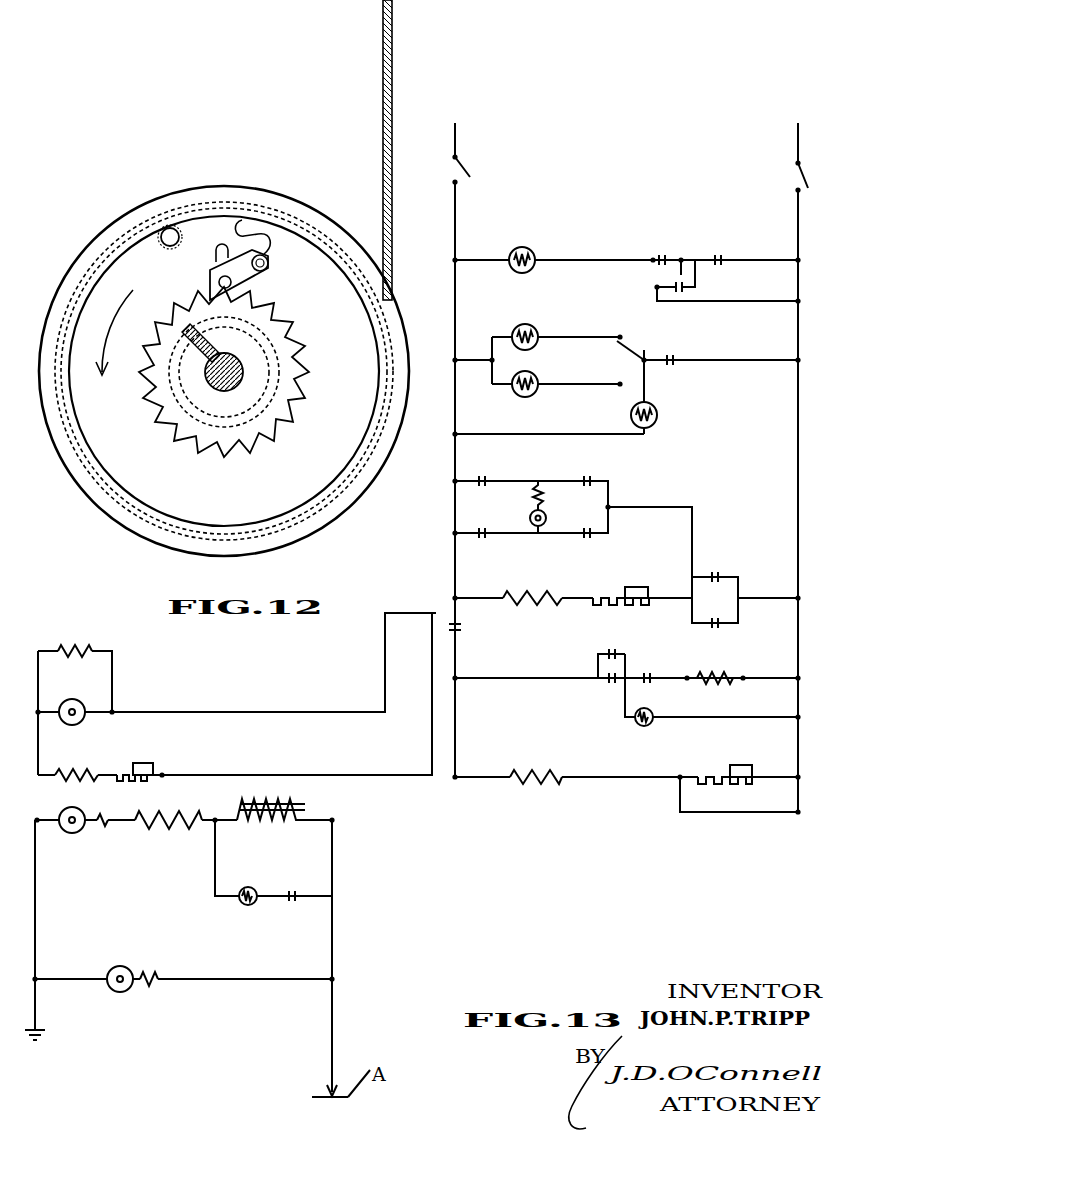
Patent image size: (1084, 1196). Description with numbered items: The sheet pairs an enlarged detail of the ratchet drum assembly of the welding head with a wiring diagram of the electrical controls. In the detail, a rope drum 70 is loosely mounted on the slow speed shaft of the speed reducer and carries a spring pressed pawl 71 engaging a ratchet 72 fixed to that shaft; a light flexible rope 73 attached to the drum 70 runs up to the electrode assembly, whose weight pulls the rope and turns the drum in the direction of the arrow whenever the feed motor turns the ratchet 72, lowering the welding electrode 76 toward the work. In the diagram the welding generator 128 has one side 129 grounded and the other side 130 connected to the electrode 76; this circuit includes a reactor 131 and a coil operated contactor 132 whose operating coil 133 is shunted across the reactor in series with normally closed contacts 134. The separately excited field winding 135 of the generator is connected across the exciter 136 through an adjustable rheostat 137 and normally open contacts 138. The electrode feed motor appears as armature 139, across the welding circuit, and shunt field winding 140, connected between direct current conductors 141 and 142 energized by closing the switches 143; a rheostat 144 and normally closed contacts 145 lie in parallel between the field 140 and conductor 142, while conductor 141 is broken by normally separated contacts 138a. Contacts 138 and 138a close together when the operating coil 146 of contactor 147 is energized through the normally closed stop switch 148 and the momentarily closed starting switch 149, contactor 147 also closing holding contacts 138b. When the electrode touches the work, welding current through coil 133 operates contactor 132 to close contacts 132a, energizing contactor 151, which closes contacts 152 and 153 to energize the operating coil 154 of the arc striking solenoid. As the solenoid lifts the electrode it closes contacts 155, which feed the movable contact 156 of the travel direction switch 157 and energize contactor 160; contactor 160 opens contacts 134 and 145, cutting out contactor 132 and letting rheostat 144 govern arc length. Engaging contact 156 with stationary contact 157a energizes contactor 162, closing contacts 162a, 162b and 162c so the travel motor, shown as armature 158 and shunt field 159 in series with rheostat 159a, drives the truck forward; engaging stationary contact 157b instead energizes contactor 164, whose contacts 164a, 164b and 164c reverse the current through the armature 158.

In FIG. 12, the rope drum 70 is at (228, 202).
In FIG. 12, the spring pressed pawl 71 is at (262, 283).
In FIG. 12, the ratchet 72 is at (265, 327).
In FIG. 12, the rope 73 is at (393, 112).
In FIG. 13, the welding electrode 76 is at (327, 1093).
In FIG. 13, the generator 128 is at (72, 833).
In FIG. 13, the welding circuit side 129 is at (38, 915).
In FIG. 13, the welding circuit side 130 is at (334, 881).
In FIG. 13, the reactor 131 is at (313, 805).
In FIG. 13, the coil operated contactor 132 is at (257, 907).
In FIG. 13, the normally separated contacts 132a is at (611, 681).
In FIG. 13, the operating coil 133 is at (243, 902).
In FIG. 13, the normally closed contacts 134 is at (293, 884).
In FIG. 13, the field winding 135 is at (77, 767).
In FIG. 13, the exciter 136 is at (91, 702).
In FIG. 13, the adjustable rheostat 137 is at (163, 767).
In FIG. 13, the normally open contacts 138 is at (429, 626).
In FIG. 13, the normally separated contacts 138a is at (460, 632).
In FIG. 13, the normally open contacts 138b is at (724, 255).
In FIG. 13, the armature 139 is at (140, 951).
In FIG. 13, the shunt field winding 140 is at (537, 764).
In FIG. 13, the conductor 141 is at (455, 498).
In FIG. 13, the conductor 142 is at (798, 438).
In FIG. 13, the switches 143 is at (452, 175).
In FIG. 13, the adjustable rheostat 144 is at (744, 761).
In FIG. 13, the normally closed contacts 145 is at (727, 812).
In FIG. 13, the operating coil 146 is at (530, 272).
In FIG. 13, the contactor 147 is at (532, 250).
In FIG. 13, the stop switch 148 is at (665, 254).
In FIG. 13, the starting switch 149 is at (657, 284).
In FIG. 13, the coil operated contactor 151 is at (645, 726).
In FIG. 13, the normally open contacts 152 is at (618, 645).
In FIG. 13, the normally open contacts 153 is at (647, 669).
In FIG. 13, the operating coil 154 is at (714, 683).
In FIG. 13, the contacts 155 is at (675, 352).
In FIG. 13, the movable contact 156 is at (632, 344).
In FIG. 13, the switch 157 is at (620, 360).
In FIG. 13, the stationary contact 157a is at (618, 336).
In FIG. 13, the stationary contact 157b is at (620, 387).
In FIG. 13, the armature 158 is at (545, 519).
In FIG. 13, the shunt field winding 159 is at (530, 607).
In FIG. 13, the adjustable rheostat 159a is at (629, 589).
In FIG. 13, the coil operated contactor 160 is at (657, 429).
In FIG. 13, the contactor 162 is at (521, 321).
In FIG. 13, the normally open contacts 162a is at (484, 475).
In FIG. 13, the normally open contacts 162b is at (592, 540).
In FIG. 13, the normally open contacts 162c is at (722, 627).
In FIG. 13, the contactor 164 is at (522, 395).
In FIG. 13, the normally separated contacts 164a is at (485, 531).
In FIG. 13, the normally separated contacts 164b is at (591, 475).
In FIG. 13, the normally separated contacts 164c is at (718, 571).